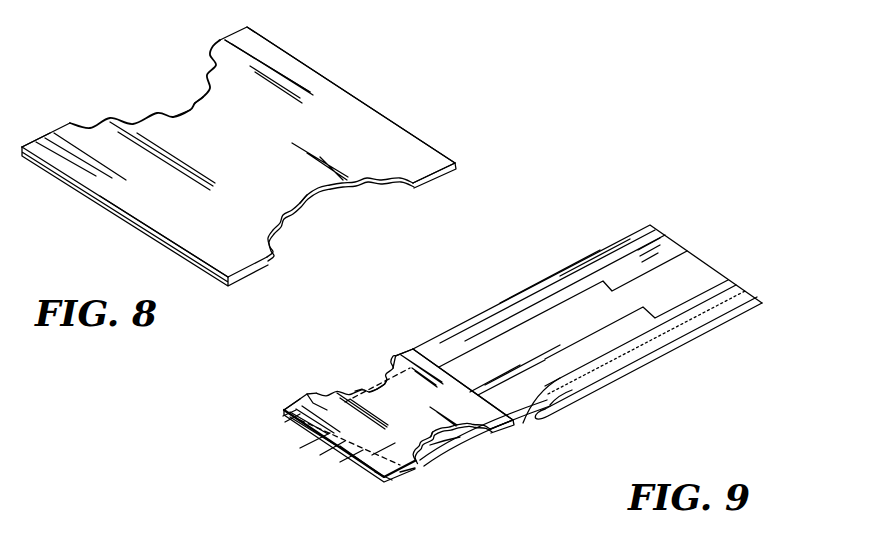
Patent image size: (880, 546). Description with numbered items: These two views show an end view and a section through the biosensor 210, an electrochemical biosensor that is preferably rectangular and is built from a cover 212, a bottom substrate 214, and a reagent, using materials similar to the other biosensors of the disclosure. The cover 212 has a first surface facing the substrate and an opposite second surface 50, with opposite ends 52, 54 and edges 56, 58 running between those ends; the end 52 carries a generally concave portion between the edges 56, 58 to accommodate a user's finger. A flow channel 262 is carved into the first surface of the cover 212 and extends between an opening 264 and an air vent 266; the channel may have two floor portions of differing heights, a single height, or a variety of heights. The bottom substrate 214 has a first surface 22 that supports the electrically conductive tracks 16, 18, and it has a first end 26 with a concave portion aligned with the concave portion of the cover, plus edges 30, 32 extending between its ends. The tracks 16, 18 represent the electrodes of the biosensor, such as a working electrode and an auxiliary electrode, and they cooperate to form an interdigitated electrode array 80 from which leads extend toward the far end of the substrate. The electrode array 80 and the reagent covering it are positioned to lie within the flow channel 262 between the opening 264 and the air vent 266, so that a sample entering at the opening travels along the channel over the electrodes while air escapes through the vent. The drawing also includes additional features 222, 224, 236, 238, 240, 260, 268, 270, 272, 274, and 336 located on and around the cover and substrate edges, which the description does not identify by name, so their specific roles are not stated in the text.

In FIG. 9, the electrically conductive track 16 is at (667, 250).
In FIG. 9, the electrically conductive track 18 is at (727, 280).
In FIG. 9, the first surface 22 is at (700, 260).
In FIG. 9, the first end 26 is at (380, 480).
In FIG. 9, the edge 30 is at (644, 364).
In FIG. 9, the edge 32 is at (558, 268).
In FIG. 8, the second surface 50 is at (280, 163).
In FIG. 9, the second surface 50 is at (381, 423).
In FIG. 8, the end 52 is at (157, 231).
In FIG. 9, the end 52 is at (372, 483).
In FIG. 8, the end 54 is at (403, 123).
In FIG. 9, the end 54 is at (433, 358).
In FIG. 8, the edge 56 is at (452, 168).
In FIG. 9, the edge 56 is at (425, 470).
In FIG. 8, the edge 58 is at (46, 140).
In FIG. 9, the edge 58 is at (280, 405).
In FIG. 9, the interdigitated electrode array 80 is at (458, 370).
In FIG. 9, the biosensor 210 is at (590, 245).
In FIG. 8, the cover 212 is at (356, 92).
In FIG. 9, the cover 212 is at (315, 444).
In FIG. 9, the bottom substrate 214 is at (713, 324).
In FIG. 9, the lip 222 is at (440, 447).
In FIG. 9, the tab 224 is at (366, 378).
In FIG. 9, the lower lip 236 is at (403, 480).
In FIG. 9, the flange 238 is at (330, 455).
In FIG. 9, the tab 240 is at (361, 383).
In FIG. 8, the lower notch 260 is at (347, 214).
In FIG. 9, the lower notch 260 is at (475, 445).
In FIG. 8, the flow channel 262 is at (124, 91).
In FIG. 9, the flow channel 262 is at (314, 389).
In FIG. 8, the opening 264 is at (195, 105).
In FIG. 9, the opening 264 is at (380, 367).
In FIG. 9, the air vent 266 is at (396, 350).
In FIG. 9, the weld strip 268 is at (478, 395).
In FIG. 9, the edge segment 270 is at (413, 349).
In FIG. 9, the weld strip 272 is at (486, 384).
In FIG. 9, the curved tab 274 is at (507, 433).
In FIG. 9, the rounded tab 336 is at (550, 405).